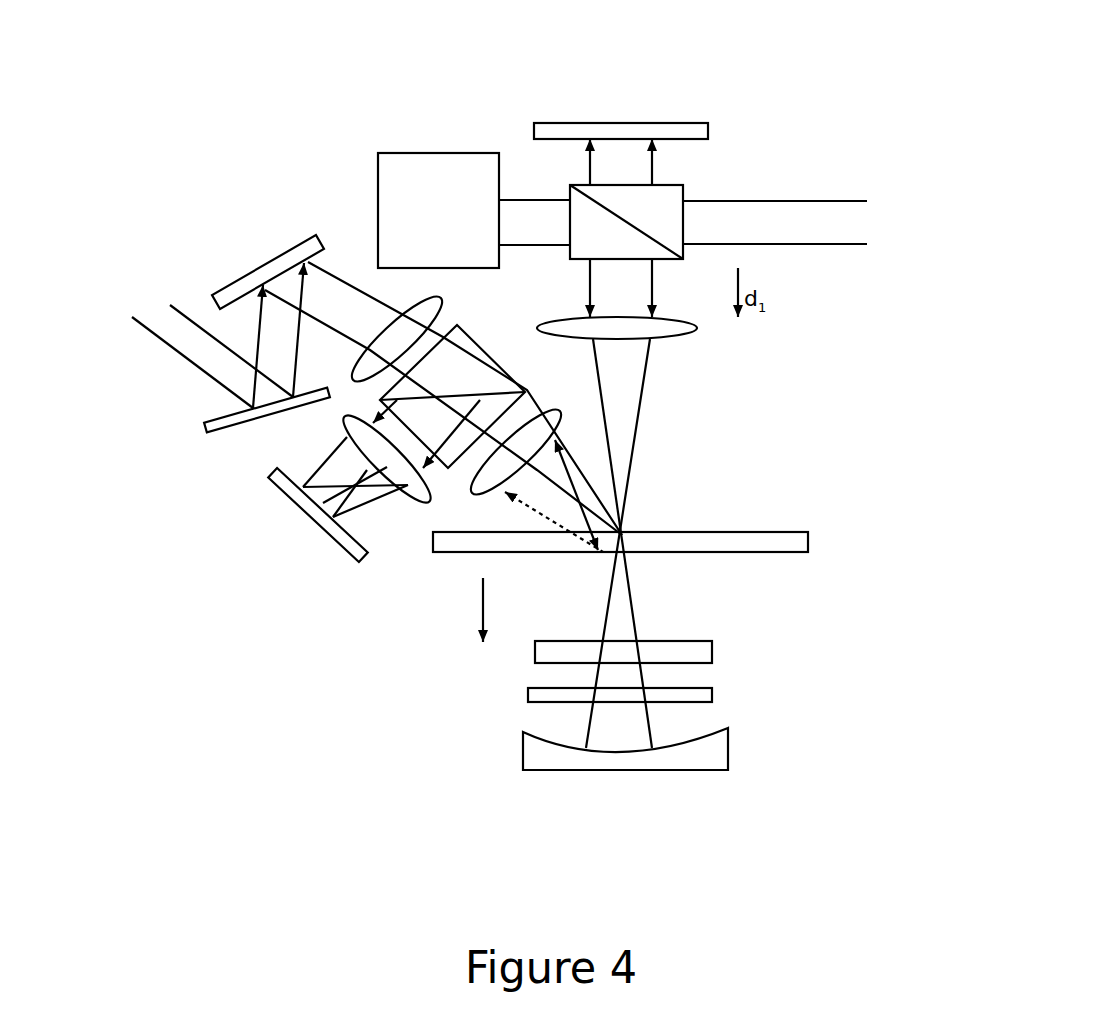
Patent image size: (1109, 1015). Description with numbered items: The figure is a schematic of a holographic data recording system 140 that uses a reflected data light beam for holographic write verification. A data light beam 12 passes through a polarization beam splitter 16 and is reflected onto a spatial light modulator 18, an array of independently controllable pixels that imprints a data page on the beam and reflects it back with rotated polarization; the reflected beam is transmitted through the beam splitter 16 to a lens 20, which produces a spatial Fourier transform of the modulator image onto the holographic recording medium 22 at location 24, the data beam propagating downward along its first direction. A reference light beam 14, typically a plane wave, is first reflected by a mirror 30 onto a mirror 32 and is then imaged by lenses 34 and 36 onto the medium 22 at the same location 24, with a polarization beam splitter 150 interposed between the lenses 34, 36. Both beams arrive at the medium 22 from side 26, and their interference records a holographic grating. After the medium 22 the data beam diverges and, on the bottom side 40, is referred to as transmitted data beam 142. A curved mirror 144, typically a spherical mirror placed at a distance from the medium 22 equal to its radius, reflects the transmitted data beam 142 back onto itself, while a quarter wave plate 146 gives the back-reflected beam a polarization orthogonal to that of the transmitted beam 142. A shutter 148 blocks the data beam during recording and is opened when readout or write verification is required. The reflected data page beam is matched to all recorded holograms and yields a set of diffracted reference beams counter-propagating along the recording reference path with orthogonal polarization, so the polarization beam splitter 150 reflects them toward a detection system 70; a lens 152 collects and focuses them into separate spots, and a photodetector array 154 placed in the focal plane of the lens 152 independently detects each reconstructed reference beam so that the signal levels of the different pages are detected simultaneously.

The holographic data recording system 140 is at (332, 102).
The detection system 70 is at (445, 153).
The spatial light modulator 18 is at (640, 123).
The polarization beam splitter 16 is at (672, 213).
The data light beam 12 is at (752, 200).
The lens 20 is at (655, 333).
The transmitted data beam 142 is at (605, 597).
The reference light beam 14 is at (157, 340).
The mirror 30 is at (235, 432).
The mirror 32 is at (275, 257).
The lens 34 is at (403, 337).
The polarization beam splitter 150 is at (448, 468).
The lens 152 is at (340, 433).
The photodetector array 154 is at (327, 530).
The lens 36 is at (476, 497).
The holographic recording medium 22 is at (727, 533).
The location 24 is at (625, 532).
The side 26 is at (700, 498).
The bottom side 40 is at (437, 695).
The quarter wave plate 146 is at (702, 650).
The shutter 148 is at (712, 692).
The curved mirror 144 is at (712, 757).